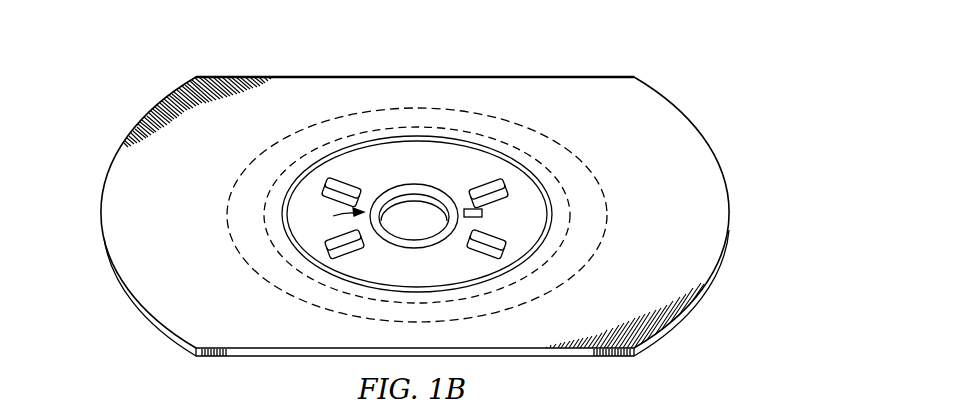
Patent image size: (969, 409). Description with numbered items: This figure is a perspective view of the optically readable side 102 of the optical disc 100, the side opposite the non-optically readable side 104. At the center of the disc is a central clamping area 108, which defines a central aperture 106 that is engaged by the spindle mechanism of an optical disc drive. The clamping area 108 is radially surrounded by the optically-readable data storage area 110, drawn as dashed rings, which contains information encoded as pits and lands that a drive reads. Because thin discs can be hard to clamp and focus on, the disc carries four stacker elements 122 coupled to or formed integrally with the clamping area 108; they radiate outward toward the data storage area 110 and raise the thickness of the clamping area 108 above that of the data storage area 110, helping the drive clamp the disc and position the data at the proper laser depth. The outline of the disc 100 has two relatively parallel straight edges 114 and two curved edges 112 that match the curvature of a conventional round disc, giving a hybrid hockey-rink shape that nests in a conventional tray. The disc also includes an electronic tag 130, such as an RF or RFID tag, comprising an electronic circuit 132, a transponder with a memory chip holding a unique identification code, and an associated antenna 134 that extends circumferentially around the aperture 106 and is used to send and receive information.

The optical disc 100 is at (416, 218).
The optically readable side 102 is at (666, 122).
The non-optically readable side 104 is at (585, 92).
The central aperture 106 is at (430, 222).
The central clamping area 108 is at (308, 192).
The optically-readable data storage area 110 is at (608, 216).
The curved edges 112 is at (102, 222).
The straight edges 114 is at (308, 76).
The stacker elements 122 is at (348, 181).
The electronic tag 130 is at (329, 217).
The electronic circuit 132 is at (483, 216).
The antenna 134 is at (400, 185).